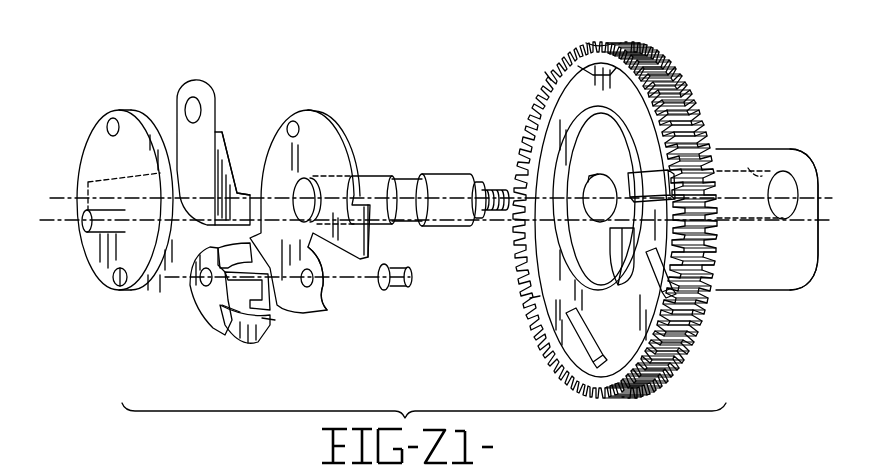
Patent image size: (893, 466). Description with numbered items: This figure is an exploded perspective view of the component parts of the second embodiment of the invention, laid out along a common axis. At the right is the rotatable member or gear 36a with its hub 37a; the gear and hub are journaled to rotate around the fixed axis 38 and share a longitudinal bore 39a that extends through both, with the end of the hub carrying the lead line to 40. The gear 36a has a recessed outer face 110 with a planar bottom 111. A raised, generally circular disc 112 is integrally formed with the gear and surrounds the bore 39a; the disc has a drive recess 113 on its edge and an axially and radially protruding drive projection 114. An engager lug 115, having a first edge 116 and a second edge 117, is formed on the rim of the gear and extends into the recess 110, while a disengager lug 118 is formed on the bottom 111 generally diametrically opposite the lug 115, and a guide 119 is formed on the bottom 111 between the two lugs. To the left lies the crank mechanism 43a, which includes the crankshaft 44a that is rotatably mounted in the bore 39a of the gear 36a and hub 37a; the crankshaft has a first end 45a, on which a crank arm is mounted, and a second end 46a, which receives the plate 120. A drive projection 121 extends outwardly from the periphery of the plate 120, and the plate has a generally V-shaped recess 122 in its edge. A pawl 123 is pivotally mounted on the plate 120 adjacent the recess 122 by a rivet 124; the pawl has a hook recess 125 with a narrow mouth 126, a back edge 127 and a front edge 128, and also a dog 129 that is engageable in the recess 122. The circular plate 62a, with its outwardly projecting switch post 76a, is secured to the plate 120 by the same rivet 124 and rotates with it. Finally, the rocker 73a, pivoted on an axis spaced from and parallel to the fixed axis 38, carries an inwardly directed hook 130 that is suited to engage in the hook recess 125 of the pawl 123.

The gear 36a is at (686, 78).
The hub 37a is at (780, 149).
The fixed axis 38 is at (818, 233).
The longitudinal bore 39a is at (600, 171).
The hub end 40 is at (822, 212).
The crank mechanism 43a is at (368, 118).
The crankshaft 44a is at (404, 178).
The first end 45a is at (470, 178).
The second end 46a is at (362, 178).
The circular plate 62a is at (106, 117).
The rocker 73a is at (216, 97).
The switch post 76a is at (102, 237).
The recessed outer face 110 is at (534, 300).
The planar bottom 111 is at (608, 316).
The raised disc 112 is at (606, 112).
The drive recess 113 is at (610, 242).
The drive projection 114 is at (650, 172).
The engager lug 115 is at (600, 63).
The first edge 116 is at (550, 78).
The second edge 117 is at (604, 75).
The disengager lug 118 is at (568, 333).
The guide 119 is at (657, 296).
The plate 120 is at (312, 102).
The drive projection 121 is at (369, 240).
The V-shaped recess 122 is at (324, 251).
The pawl 123 is at (182, 294).
The rivet 124 is at (395, 292).
The hook recess 125 is at (224, 341).
The narrow mouth 126 is at (270, 317).
The back edge 127 is at (222, 308).
The front edge 128 is at (252, 300).
The dog 129 is at (223, 247).
The hook 130 is at (239, 187).